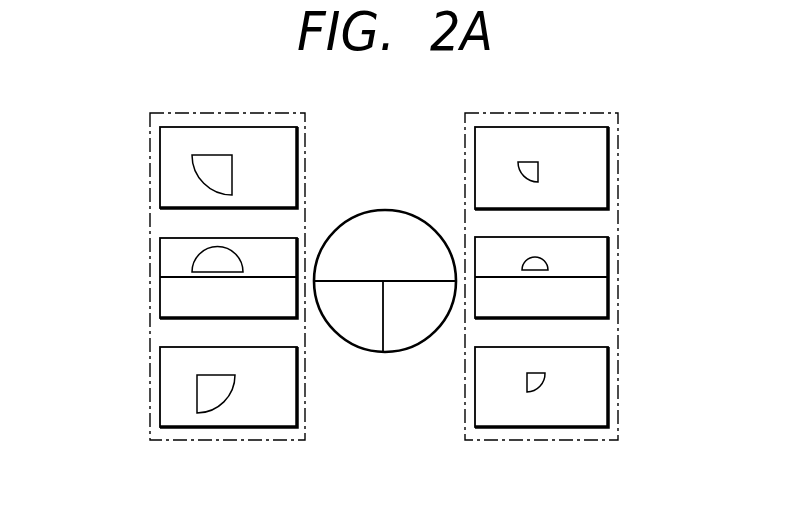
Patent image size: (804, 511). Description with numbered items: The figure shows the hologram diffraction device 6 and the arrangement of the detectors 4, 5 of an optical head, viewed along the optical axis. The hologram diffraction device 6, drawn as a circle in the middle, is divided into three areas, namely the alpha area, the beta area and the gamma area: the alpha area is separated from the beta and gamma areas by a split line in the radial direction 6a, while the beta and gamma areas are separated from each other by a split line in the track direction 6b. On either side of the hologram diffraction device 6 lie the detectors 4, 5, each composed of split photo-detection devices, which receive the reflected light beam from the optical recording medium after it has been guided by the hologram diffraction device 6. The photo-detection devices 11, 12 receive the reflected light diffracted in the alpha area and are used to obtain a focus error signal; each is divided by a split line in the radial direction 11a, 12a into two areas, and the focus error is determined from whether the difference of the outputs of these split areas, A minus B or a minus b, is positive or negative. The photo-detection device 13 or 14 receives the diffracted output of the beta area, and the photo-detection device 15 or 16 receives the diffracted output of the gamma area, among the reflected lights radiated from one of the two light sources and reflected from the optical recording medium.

The detector 4 is at (590, 440).
The detector 5 is at (160, 442).
The hologram diffraction device 6 is at (386, 210).
The split line in the radial direction 6a is at (347, 280).
The split line in the track direction 6b is at (382, 326).
The photo-detection device 11 is at (608, 237).
The split line in the radial direction 11a is at (503, 278).
The photo-detection device 12 is at (160, 253).
The split line in the radial direction 12a is at (175, 277).
The photo-detection device 13 is at (608, 147).
The photo-detection device 14 is at (160, 141).
The photo-detection device 15 is at (608, 355).
The photo-detection device 16 is at (160, 394).